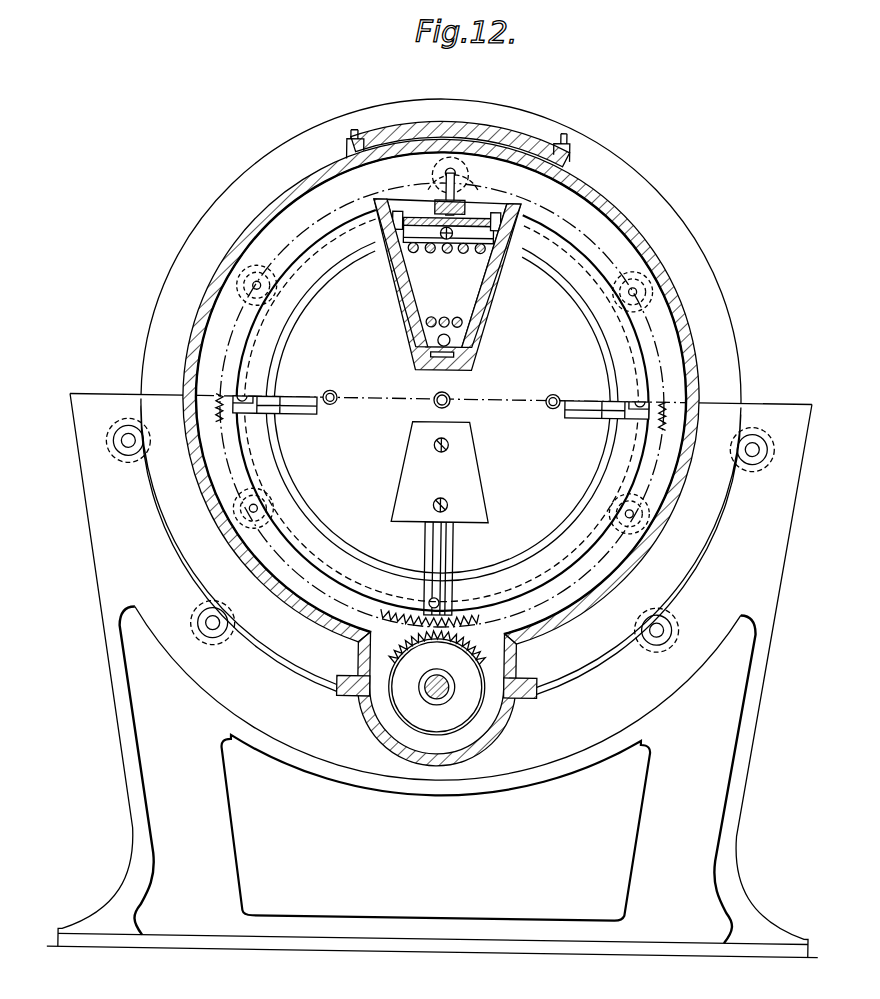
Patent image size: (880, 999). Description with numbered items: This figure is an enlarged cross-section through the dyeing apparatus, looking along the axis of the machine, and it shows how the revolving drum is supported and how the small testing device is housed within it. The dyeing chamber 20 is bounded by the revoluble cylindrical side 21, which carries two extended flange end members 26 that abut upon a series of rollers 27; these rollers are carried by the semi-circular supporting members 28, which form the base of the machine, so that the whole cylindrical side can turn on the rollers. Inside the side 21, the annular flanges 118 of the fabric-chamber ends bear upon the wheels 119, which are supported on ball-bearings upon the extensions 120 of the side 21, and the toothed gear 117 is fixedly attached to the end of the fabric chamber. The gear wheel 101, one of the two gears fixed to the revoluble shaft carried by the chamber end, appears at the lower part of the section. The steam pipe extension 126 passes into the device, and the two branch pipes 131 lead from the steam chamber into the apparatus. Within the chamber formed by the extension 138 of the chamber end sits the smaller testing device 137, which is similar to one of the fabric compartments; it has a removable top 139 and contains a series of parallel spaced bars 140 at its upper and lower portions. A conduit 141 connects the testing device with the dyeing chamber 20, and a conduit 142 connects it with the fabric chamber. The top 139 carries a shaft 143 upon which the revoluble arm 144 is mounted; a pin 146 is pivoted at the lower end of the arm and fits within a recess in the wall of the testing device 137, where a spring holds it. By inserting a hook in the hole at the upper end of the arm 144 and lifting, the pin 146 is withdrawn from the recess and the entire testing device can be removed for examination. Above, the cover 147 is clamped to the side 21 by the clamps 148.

The dyeing chamber 20 is at (444, 405).
The revoluble cylindrical side 21 is at (647, 243).
The extended flange end members 26 is at (150, 326).
The rollers 27 is at (200, 609).
The semi-circular supporting members 28 is at (213, 686).
The gear wheel 101 is at (396, 612).
The toothed gear 117 is at (220, 423).
The annular flanges 118 is at (318, 553).
The wheels 119 is at (268, 297).
The extensions 120 is at (296, 505).
The steam pipe extension 126 is at (434, 397).
The branch pipes 131 is at (333, 406).
The testing device 137 is at (496, 278).
The extension of the end 138 is at (488, 318).
The removable top 139 is at (479, 221).
The parallel spaced bars 140 is at (457, 316).
The conduit 141 is at (389, 256).
The conduit 142 is at (436, 343).
The shaft 143 is at (440, 174).
The revoluble arm 144 is at (456, 174).
The pin 146 is at (440, 205).
The cover 147 is at (504, 132).
The clamps 148 is at (347, 136).